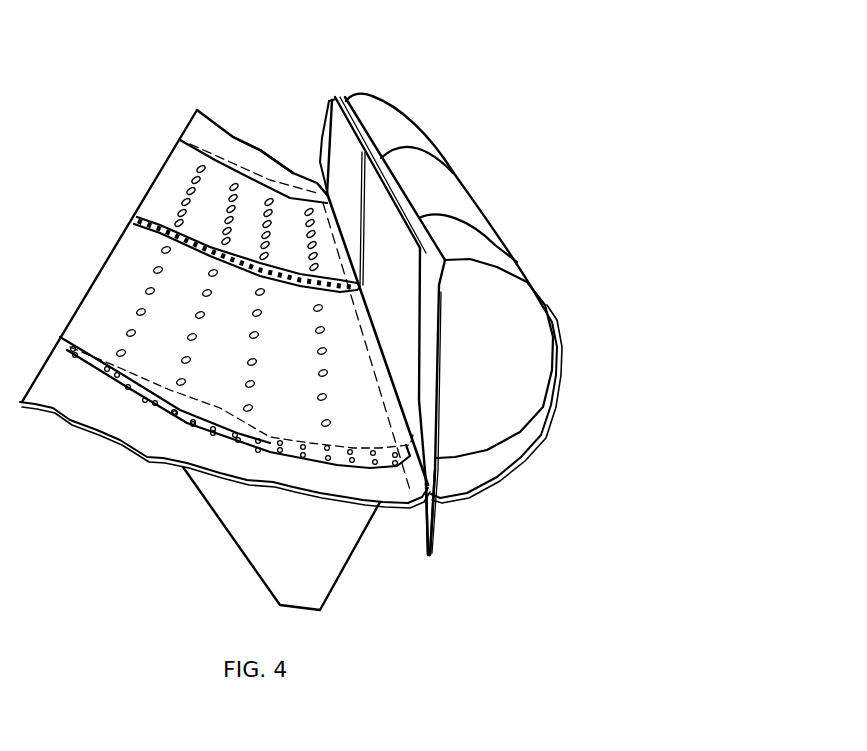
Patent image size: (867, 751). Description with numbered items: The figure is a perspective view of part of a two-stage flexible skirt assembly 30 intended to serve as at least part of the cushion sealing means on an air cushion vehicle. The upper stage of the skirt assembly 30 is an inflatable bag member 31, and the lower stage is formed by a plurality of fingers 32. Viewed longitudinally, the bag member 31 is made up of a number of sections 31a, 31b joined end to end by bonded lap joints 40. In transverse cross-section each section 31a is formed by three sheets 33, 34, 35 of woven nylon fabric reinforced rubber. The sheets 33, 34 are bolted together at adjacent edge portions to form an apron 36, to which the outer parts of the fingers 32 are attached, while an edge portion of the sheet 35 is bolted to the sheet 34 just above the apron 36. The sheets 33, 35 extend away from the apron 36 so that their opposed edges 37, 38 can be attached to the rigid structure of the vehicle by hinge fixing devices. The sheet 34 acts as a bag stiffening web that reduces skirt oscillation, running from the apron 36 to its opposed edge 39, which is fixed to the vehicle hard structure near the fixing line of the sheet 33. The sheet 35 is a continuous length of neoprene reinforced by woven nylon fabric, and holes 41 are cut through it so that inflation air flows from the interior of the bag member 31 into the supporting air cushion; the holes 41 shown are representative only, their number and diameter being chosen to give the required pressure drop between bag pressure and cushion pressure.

The two-stage flexible skirt assembly 30 is at (289, 136).
The inflatable bag member 31 is at (113, 326).
The bag member section 31a is at (484, 200).
The bag member section 31b is at (437, 129).
The fingers 32 is at (333, 593).
The sheet 33 is at (380, 139).
The sheet 34 is at (336, 194).
The sheet 35 is at (177, 173).
The apron 36 is at (433, 531).
The edge of sheet 33 37 is at (344, 98).
The edge of sheet 35 38 is at (97, 276).
The edge of sheet 34 39 is at (330, 100).
The bonded lap joints 40 is at (233, 401).
The holes 41 is at (173, 207).